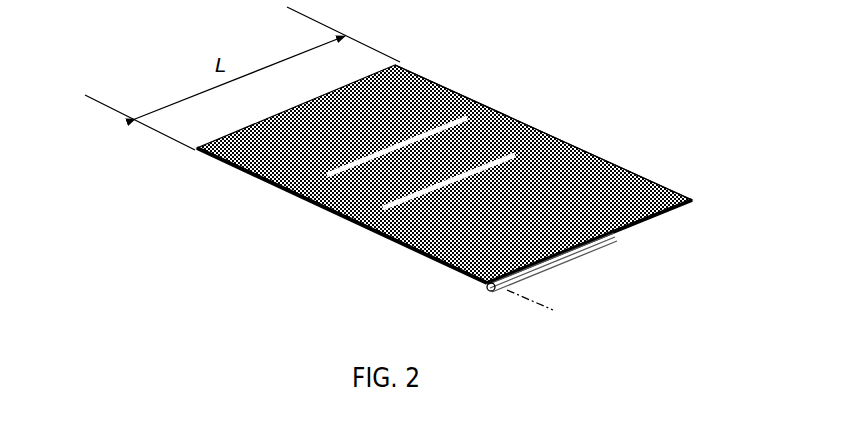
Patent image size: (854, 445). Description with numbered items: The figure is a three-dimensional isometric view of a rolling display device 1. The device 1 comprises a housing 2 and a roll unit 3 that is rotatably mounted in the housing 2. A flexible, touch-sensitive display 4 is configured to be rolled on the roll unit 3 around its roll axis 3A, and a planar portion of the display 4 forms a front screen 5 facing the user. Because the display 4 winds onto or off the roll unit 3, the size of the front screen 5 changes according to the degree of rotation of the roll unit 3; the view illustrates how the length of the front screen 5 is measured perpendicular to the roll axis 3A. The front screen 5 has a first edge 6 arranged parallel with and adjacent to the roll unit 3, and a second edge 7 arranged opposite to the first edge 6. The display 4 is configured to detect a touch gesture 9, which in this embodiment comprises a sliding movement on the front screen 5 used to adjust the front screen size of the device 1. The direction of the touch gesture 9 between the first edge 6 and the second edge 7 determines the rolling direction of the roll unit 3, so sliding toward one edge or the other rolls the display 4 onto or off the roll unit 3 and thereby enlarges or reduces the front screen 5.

The rolling display device 1 is at (609, 87).
The housing 2 is at (597, 247).
The roll unit 3 is at (480, 288).
The roll axis 3A is at (528, 300).
The flexible, touch-sensitive display 4 is at (652, 210).
The front screen 5 is at (530, 217).
The first edge 6 is at (315, 212).
The second edge 7 is at (623, 170).
The touch gesture 9 is at (483, 158).